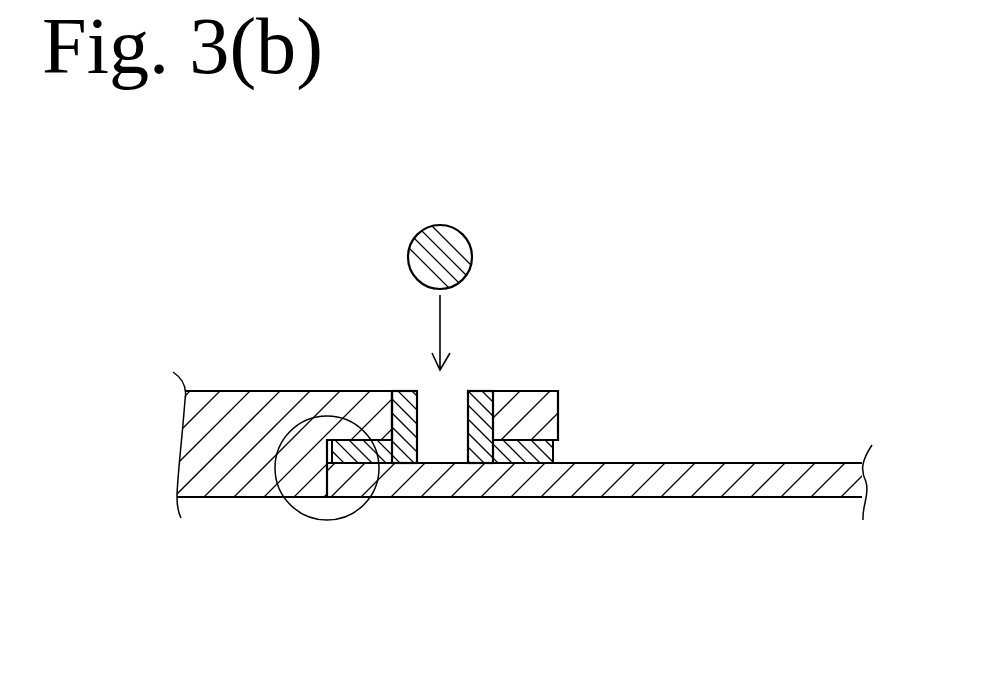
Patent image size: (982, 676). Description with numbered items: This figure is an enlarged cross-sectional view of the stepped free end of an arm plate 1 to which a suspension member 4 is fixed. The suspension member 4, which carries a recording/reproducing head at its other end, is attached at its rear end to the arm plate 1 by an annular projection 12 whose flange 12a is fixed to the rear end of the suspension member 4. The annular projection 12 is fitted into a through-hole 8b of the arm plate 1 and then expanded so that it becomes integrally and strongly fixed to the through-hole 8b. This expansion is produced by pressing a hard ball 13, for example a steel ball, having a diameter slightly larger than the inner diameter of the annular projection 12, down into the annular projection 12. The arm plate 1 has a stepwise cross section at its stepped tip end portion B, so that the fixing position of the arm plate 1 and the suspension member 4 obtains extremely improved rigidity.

The arm plate 1 is at (218, 395).
The suspension member 4 is at (698, 485).
The through-hole 8b is at (423, 391).
The annular projection 12 is at (522, 391).
The flange 12a is at (560, 452).
The hard ball 13 is at (462, 239).
The stepped tip end portion B is at (327, 490).